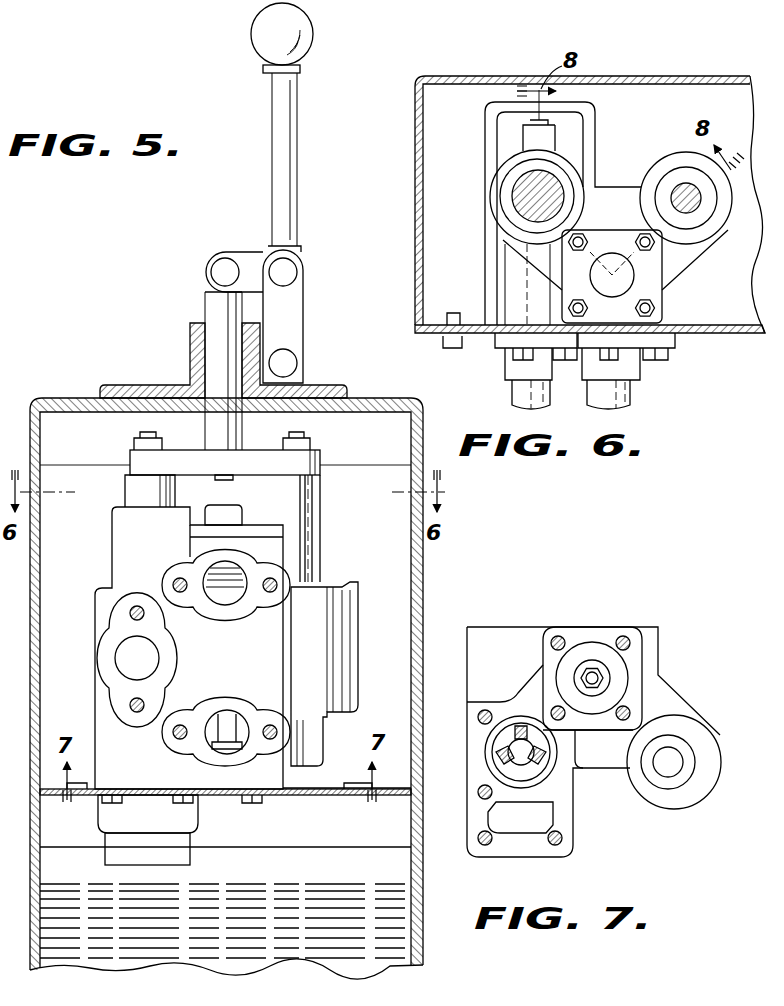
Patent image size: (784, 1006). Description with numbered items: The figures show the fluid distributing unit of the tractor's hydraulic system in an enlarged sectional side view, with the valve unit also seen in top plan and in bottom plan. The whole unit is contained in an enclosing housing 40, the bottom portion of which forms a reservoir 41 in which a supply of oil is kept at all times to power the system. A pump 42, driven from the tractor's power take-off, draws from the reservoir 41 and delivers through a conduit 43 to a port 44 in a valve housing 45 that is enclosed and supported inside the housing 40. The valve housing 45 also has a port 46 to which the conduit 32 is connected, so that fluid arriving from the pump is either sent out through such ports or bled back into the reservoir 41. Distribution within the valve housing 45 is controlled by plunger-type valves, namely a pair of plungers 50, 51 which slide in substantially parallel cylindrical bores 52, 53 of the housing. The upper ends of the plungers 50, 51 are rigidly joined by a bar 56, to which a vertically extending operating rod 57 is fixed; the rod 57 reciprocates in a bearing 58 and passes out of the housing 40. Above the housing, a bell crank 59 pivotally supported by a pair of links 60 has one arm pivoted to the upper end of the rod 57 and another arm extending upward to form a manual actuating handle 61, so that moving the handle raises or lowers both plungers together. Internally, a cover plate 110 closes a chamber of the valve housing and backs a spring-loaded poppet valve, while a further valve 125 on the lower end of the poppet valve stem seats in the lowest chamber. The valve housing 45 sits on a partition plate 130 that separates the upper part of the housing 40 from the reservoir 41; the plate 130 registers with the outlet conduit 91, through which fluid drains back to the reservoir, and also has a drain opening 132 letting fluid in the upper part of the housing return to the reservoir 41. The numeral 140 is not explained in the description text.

In FIG. 6, the conduit 32 is at (632, 387).
In FIG. 5, the enclosing housing 40 is at (425, 616).
In FIG. 6, the enclosing housing 40 is at (652, 78).
In FIG. 5, the reservoir 41 is at (322, 896).
In FIG. 5, the pump 42 is at (233, 720).
In FIG. 6, the conduit 43 is at (510, 392).
In FIG. 5, the port 44 is at (159, 658).
In FIG. 5, the valve housing 45 is at (348, 600).
In FIG. 6, the valve housing 45 is at (579, 138).
In FIG. 7, the valve housing 45 is at (663, 700).
In FIG. 5, the port 46 is at (228, 563).
In FIG. 5, the plunger 50 is at (175, 491).
In FIG. 6, the plunger 50 is at (516, 205).
In FIG. 7, the plunger 50 is at (500, 754).
In FIG. 5, the plunger 51 is at (321, 540).
In FIG. 6, the plunger 51 is at (686, 215).
In FIG. 7, the plunger 51 is at (672, 760).
In FIG. 6, the cylindrical bore 52 is at (548, 200).
In FIG. 7, the cylindrical bore 52 is at (514, 726).
In FIG. 6, the cylindrical bore 53 is at (702, 218).
In FIG. 7, the cylindrical bore 53 is at (693, 745).
In FIG. 5, the bar 56 is at (256, 460).
In FIG. 5, the operating rod 57 is at (205, 314).
In FIG. 5, the bearing 58 is at (191, 371).
In FIG. 5, the bell crank 59 is at (248, 256).
In FIG. 5, the links 60 is at (304, 326).
In FIG. 5, the manual actuating handle 61 is at (313, 31).
In FIG. 7, the outlet conduit 91 is at (508, 818).
In FIG. 5, the cover plate 110 is at (245, 500).
In FIG. 6, the cover plate 110 is at (666, 300).
In FIG. 7, the valve 125 is at (596, 660).
In FIG. 5, the partition plate 130 is at (290, 795).
In FIG. 5, the drain opening 132 is at (324, 795).
In FIG. 7, the seal ring 140 is at (500, 737).